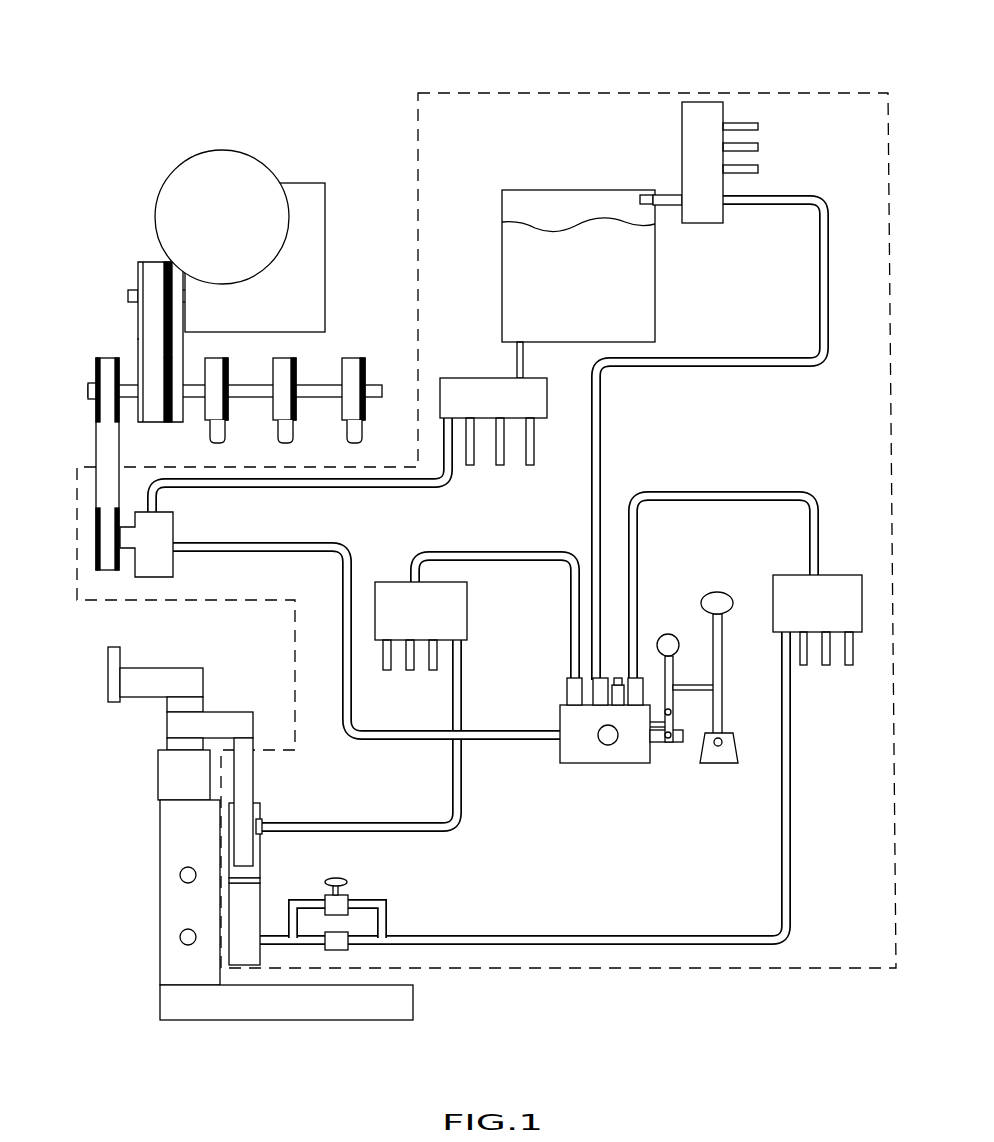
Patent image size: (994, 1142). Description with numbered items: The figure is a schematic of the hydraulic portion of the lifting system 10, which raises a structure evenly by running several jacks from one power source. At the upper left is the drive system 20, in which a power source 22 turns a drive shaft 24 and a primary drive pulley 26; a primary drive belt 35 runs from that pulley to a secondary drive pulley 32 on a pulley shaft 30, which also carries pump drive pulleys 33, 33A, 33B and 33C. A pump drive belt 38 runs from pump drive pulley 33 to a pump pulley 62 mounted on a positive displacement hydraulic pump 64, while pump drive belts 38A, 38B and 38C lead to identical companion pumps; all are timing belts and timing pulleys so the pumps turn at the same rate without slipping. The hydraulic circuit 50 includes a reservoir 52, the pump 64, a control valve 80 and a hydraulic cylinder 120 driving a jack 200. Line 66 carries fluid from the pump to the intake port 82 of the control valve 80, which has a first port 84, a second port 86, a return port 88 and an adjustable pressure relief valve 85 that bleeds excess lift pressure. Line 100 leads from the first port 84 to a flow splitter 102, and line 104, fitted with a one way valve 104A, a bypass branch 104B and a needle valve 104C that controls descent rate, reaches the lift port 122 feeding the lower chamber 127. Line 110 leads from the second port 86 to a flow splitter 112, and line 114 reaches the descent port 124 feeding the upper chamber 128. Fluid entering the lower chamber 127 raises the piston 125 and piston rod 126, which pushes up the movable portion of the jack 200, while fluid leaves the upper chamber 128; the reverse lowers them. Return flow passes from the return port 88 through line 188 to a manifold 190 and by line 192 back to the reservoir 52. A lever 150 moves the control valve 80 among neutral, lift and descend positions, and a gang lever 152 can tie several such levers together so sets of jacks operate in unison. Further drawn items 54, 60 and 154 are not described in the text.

The lifting system 10 is at (332, 92).
The drive system 20 is at (216, 132).
The power source 22 is at (315, 250).
The drive shaft 24 is at (128, 297).
The primary drive pulley 26 is at (138, 266).
The pulley shaft 30 is at (88, 391).
The secondary drive pulley 32 is at (141, 421).
The pump drive pulley 33 is at (96, 410).
The pump drive pulley 33A is at (228, 406).
The pump drive pulley 33B is at (297, 406).
The pump drive pulley 33C is at (366, 406).
The primary drive belt 35 is at (138, 338).
The pump drive belt 38 is at (96, 440).
The pump drive belt 38A is at (216, 358).
The pump drive belt 38B is at (285, 358).
The pump drive belt 38C is at (356, 358).
The hydraulic circuit 50 is at (545, 92).
The reservoir 52 is at (577, 288).
The filter 54 is at (497, 407).
The hydraulic line 60 is at (300, 465).
The pump pulley 62 is at (96, 555).
The positive displacement hydraulic pump 64 is at (163, 536).
The line 66 is at (262, 541).
The control valve 80 is at (585, 764).
The intake port 82 is at (615, 745).
The first port 84 is at (650, 703).
The adjustable pressure relief valve 85 is at (617, 678).
The second port 86 is at (567, 692).
The return port 88 is at (596, 678).
The line 100 is at (737, 492).
The flow splitter 102 is at (836, 608).
The line 104 is at (792, 792).
The one way valve 104A is at (343, 950).
The bypass branch 104B is at (388, 918).
The needle valve 104C is at (348, 879).
The line 110 is at (460, 552).
The flow splitter 112 is at (438, 622).
The line 114 is at (464, 820).
The hydraulic cylinder 120 is at (247, 982).
The lift port 122 is at (272, 934).
The descent port 124 is at (263, 824).
The piston 125 is at (236, 878).
The piston rod 126 is at (244, 772).
The lower chamber 127 is at (242, 940).
The upper chamber 128 is at (259, 806).
The lever 150 is at (668, 636).
The gang lever 152 is at (696, 687).
The foot pedal 154 is at (722, 627).
The line 188 is at (602, 404).
The manifold 190 is at (718, 168).
The line 192 is at (664, 195).
The jack 200 is at (158, 870).